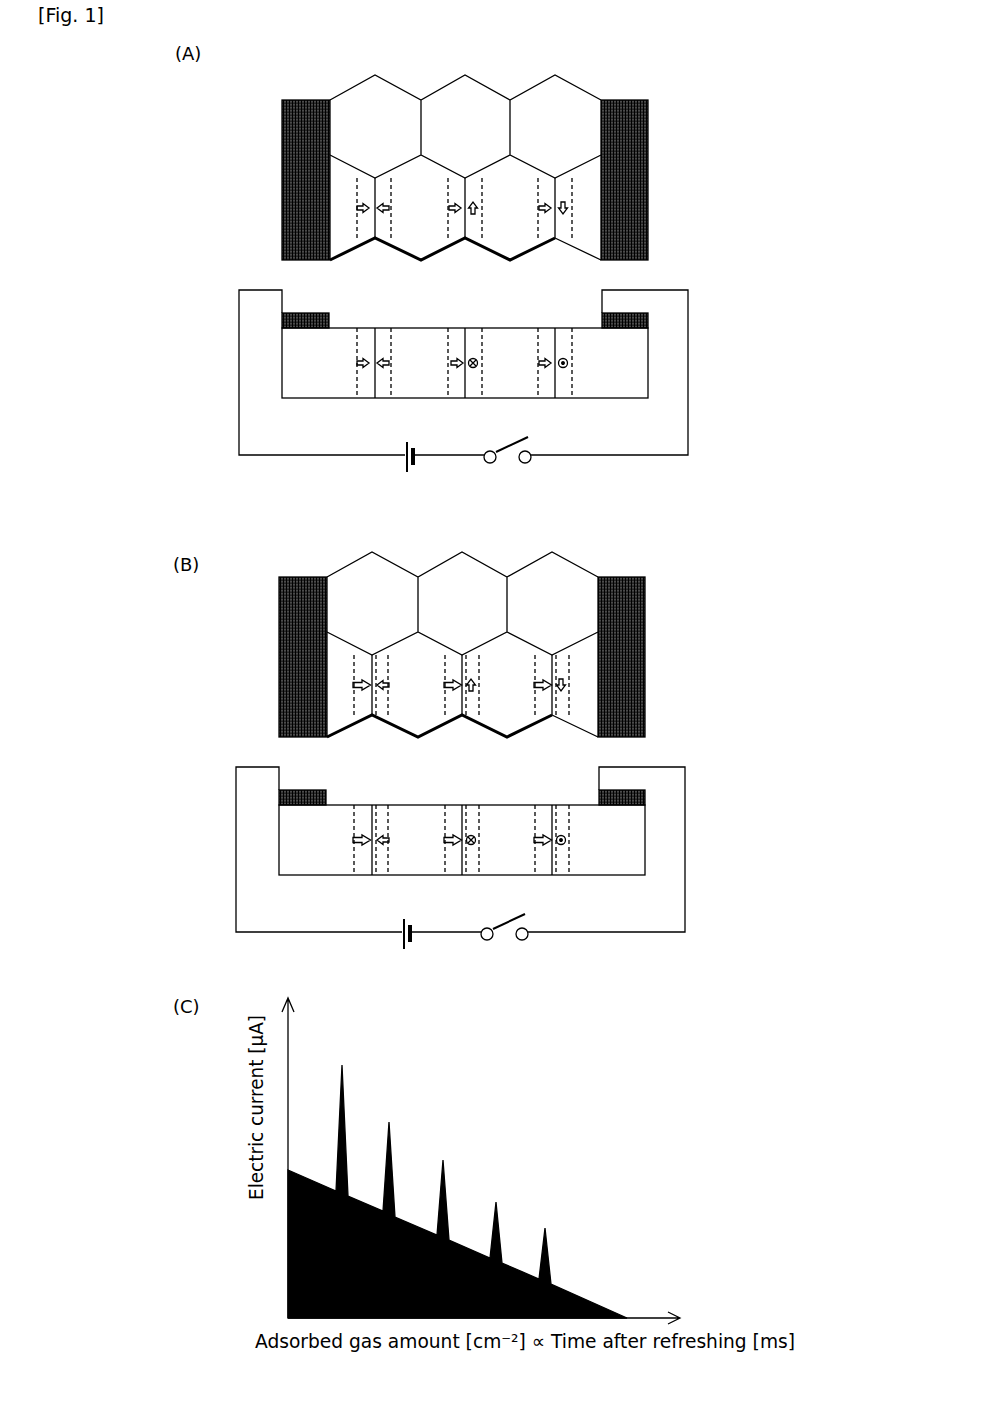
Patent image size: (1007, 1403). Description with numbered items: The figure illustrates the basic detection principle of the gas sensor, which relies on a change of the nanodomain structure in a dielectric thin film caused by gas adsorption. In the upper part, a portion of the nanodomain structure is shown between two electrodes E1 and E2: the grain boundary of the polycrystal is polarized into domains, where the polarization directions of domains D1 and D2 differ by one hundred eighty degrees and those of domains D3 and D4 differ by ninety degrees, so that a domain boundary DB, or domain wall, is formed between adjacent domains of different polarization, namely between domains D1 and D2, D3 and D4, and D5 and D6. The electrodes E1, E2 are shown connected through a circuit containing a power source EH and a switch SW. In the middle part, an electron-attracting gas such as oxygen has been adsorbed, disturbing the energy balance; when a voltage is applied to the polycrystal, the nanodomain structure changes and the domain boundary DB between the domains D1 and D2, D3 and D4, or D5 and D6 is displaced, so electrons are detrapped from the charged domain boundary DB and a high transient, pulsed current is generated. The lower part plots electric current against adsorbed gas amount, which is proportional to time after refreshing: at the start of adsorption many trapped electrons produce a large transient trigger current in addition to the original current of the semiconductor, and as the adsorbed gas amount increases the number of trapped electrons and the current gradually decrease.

The electrode E1 is at (282, 199).
The electrode E2 is at (648, 198).
The domain D1 is at (367, 187).
The domain D2 is at (383, 187).
The domain D3 is at (455, 190).
The domain D4 is at (477, 187).
The domain D5 is at (547, 187).
The domain D6 is at (565, 187).
The domain boundary DB is at (376, 229).
The power source EH is at (410, 439).
The switch SW is at (532, 445).